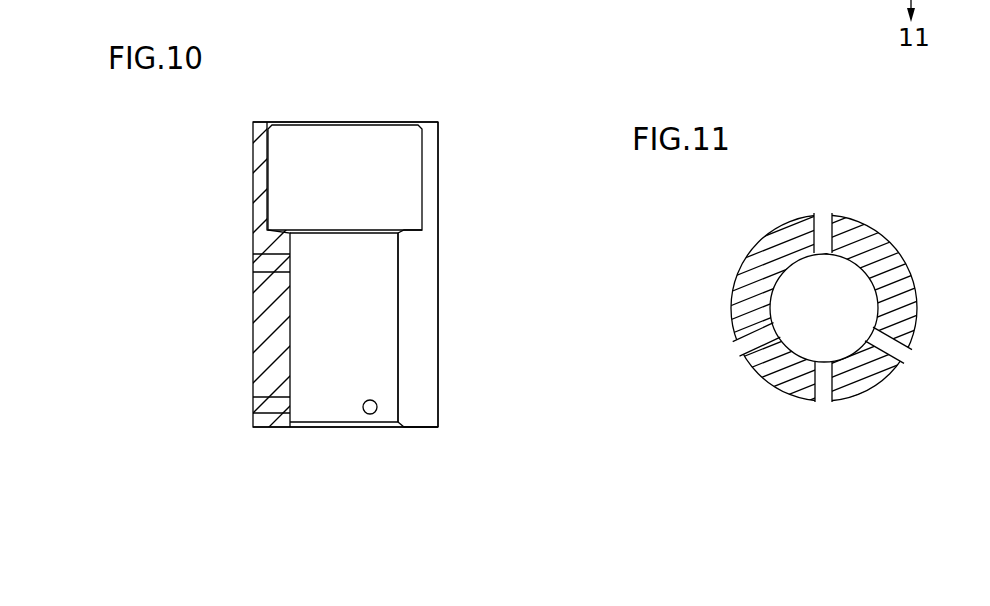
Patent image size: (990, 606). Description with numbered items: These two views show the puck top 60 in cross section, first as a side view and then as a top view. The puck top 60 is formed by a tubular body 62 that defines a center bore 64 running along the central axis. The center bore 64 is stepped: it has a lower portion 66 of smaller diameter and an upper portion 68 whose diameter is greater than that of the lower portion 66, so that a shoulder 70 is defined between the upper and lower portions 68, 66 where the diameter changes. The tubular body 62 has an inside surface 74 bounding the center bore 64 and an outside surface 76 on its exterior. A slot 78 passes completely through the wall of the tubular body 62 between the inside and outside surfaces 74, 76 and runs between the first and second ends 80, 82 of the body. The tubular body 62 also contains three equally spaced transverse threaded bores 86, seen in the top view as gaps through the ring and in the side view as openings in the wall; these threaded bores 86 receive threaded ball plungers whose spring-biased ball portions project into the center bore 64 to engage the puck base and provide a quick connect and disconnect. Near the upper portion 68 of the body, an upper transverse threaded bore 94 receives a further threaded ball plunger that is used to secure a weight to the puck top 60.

In FIG. 10, the puck top 60 is at (470, 70).
In FIG. 11, the puck top 60 is at (898, 178).
In FIG. 10, the tubular body 62 is at (437, 282).
In FIG. 11, the tubular body 62 is at (903, 257).
In FIG. 10, the center bore 64 is at (374, 170).
In FIG. 10, the lower portion 66 is at (290, 315).
In FIG. 10, the upper portion 68 is at (267, 178).
In FIG. 11, the upper portion 68 is at (770, 303).
In FIG. 10, the shoulder 70 is at (410, 229).
In FIG. 10, the inside surface 74 is at (397, 273).
In FIG. 11, the inside surface 74 is at (862, 270).
In FIG. 11, the outside surface 76 is at (766, 236).
In FIG. 10, the slot 78 is at (420, 333).
In FIG. 11, the slot 78 is at (828, 382).
In FIG. 10, the first end 80 is at (433, 122).
In FIG. 10, the second end 82 is at (415, 428).
In FIG. 10, the threaded bores 86 is at (365, 415).
In FIG. 11, the threaded bores 86 is at (826, 240).
In FIG. 10, the upper transverse threaded bore 94 is at (261, 257).